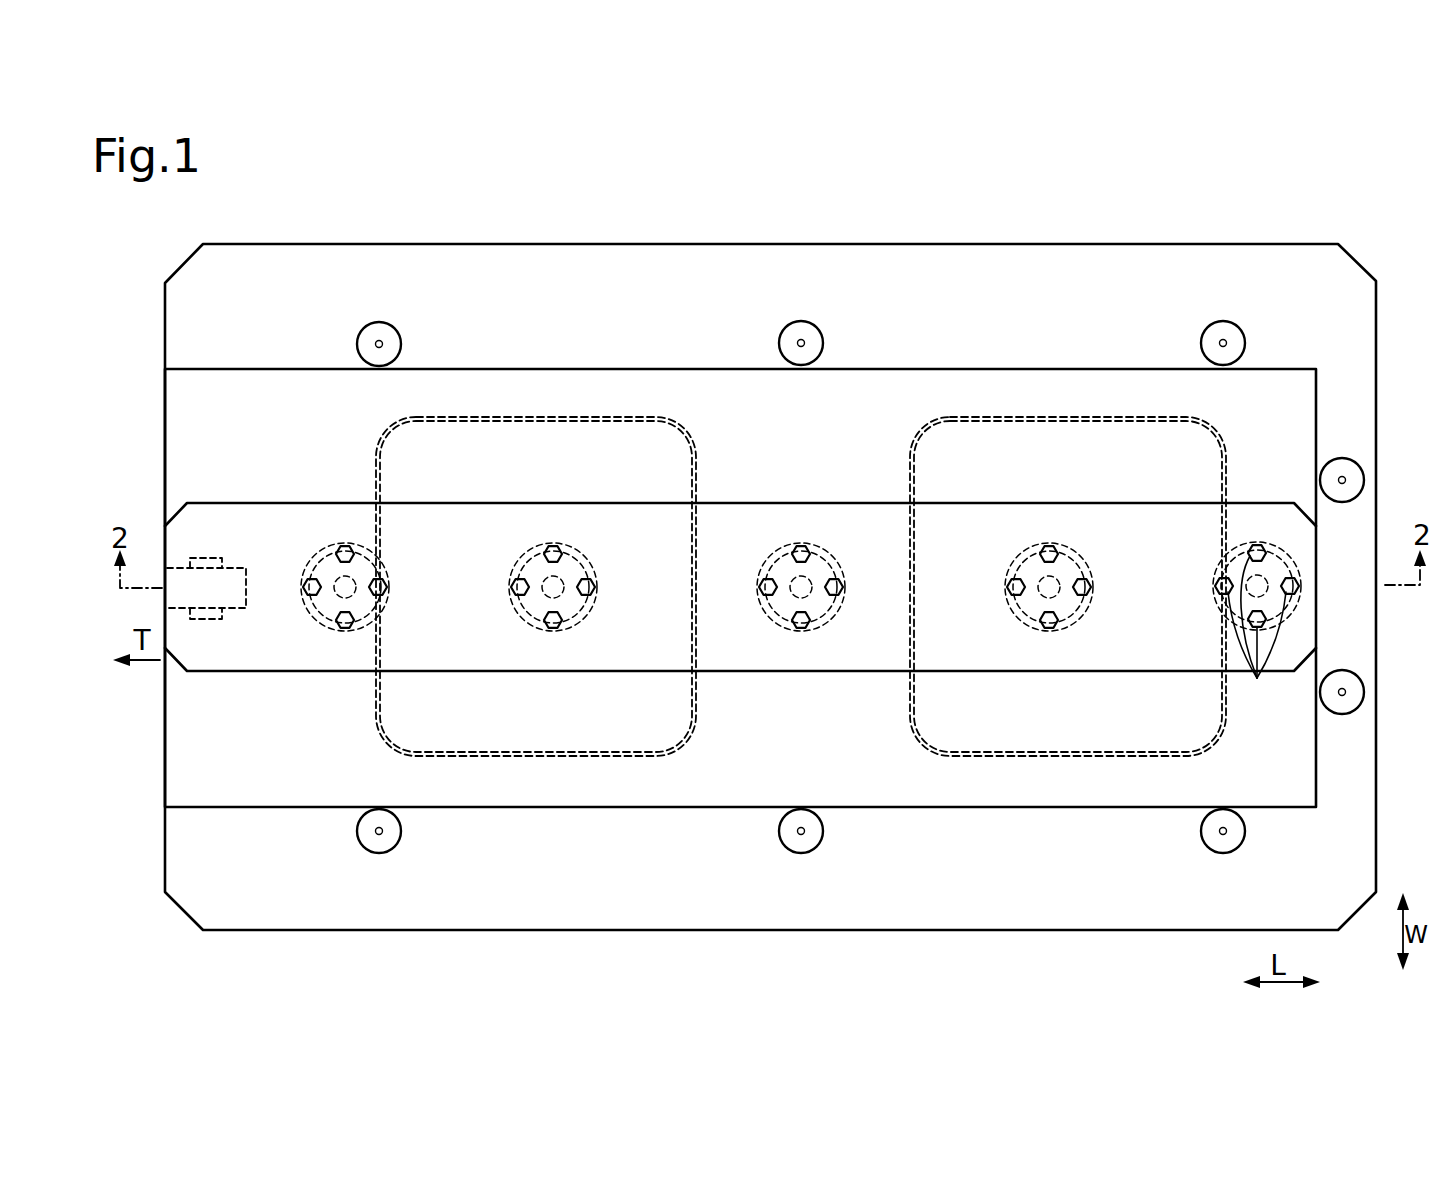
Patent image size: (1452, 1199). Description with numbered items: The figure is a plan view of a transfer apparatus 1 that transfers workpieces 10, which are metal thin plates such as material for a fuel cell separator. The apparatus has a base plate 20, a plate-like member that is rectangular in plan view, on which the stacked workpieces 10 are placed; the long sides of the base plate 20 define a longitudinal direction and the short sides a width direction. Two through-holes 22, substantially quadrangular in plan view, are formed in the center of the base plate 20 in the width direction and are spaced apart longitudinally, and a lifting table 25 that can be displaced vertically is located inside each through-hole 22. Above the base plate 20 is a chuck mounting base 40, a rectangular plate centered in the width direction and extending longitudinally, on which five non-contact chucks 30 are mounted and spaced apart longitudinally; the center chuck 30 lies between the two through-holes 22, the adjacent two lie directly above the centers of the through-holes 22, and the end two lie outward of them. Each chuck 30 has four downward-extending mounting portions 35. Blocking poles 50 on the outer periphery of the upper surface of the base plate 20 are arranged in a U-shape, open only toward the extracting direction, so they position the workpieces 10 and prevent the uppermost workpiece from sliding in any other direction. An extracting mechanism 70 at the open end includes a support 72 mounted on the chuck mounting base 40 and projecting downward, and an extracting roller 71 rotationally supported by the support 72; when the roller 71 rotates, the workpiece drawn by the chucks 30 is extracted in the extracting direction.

The transfer apparatus 1 is at (1372, 242).
The workpiece 10 is at (922, 369).
The base plate 20 is at (1152, 243).
The through-hole 22 is at (485, 745).
The lifting table 25 is at (585, 440).
The chuck 30 is at (328, 546).
The mounting portion 35 is at (1257, 633).
The chuck mounting base 40 is at (740, 671).
The blocking pole 50 is at (379, 322).
The extracting mechanism 70 is at (235, 558).
The extracting roller 71 is at (232, 619).
The support 72 is at (205, 619).